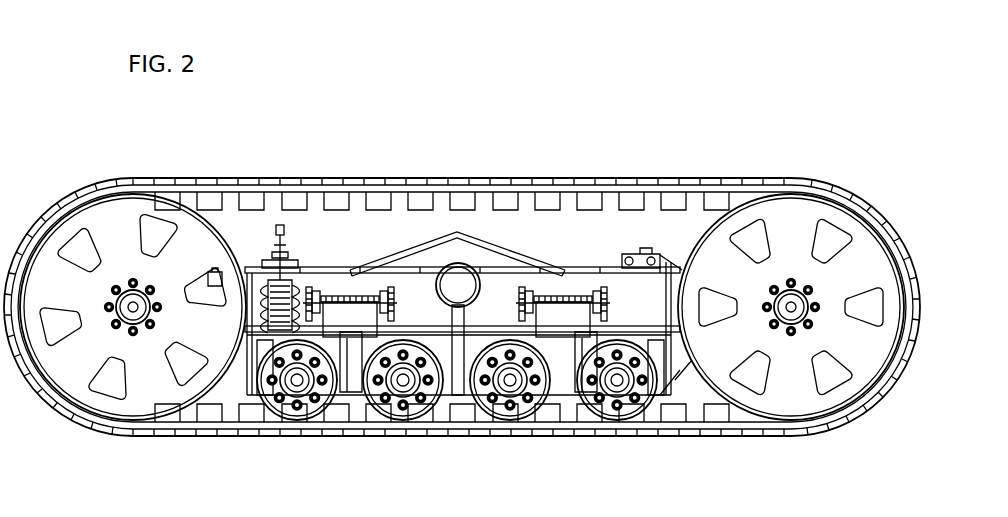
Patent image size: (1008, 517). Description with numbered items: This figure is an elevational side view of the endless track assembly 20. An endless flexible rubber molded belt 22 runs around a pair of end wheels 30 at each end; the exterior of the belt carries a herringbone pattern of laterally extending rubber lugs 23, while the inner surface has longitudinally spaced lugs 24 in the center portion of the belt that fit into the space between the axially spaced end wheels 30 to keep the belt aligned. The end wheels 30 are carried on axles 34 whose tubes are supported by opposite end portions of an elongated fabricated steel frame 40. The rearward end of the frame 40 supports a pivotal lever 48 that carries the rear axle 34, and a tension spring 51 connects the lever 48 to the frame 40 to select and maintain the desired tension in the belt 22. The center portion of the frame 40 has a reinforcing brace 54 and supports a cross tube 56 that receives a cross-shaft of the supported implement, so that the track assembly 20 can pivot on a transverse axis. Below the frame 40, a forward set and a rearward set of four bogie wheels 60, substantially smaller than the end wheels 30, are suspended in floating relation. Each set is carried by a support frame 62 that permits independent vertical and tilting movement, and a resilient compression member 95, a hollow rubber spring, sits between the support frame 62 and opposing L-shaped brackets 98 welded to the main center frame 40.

The endless track assembly 20 is at (303, 90).
The endless flexible rubber molded belt 22 is at (695, 163).
The rubber lugs 23 is at (452, 180).
The lugs 24 is at (590, 200).
The end wheels 30 is at (117, 248).
The axle 34 is at (134, 315).
The frame 40 is at (390, 222).
The pivotal lever 48 is at (249, 255).
The tension spring 51 is at (268, 297).
The reinforcing brace 54 is at (510, 247).
The cross tube 56 is at (472, 262).
The bogie wheels 60 is at (315, 398).
The support frame 62 is at (353, 402).
The resilient compression member 95 is at (350, 317).
The L-shaped brackets 98 is at (395, 303).